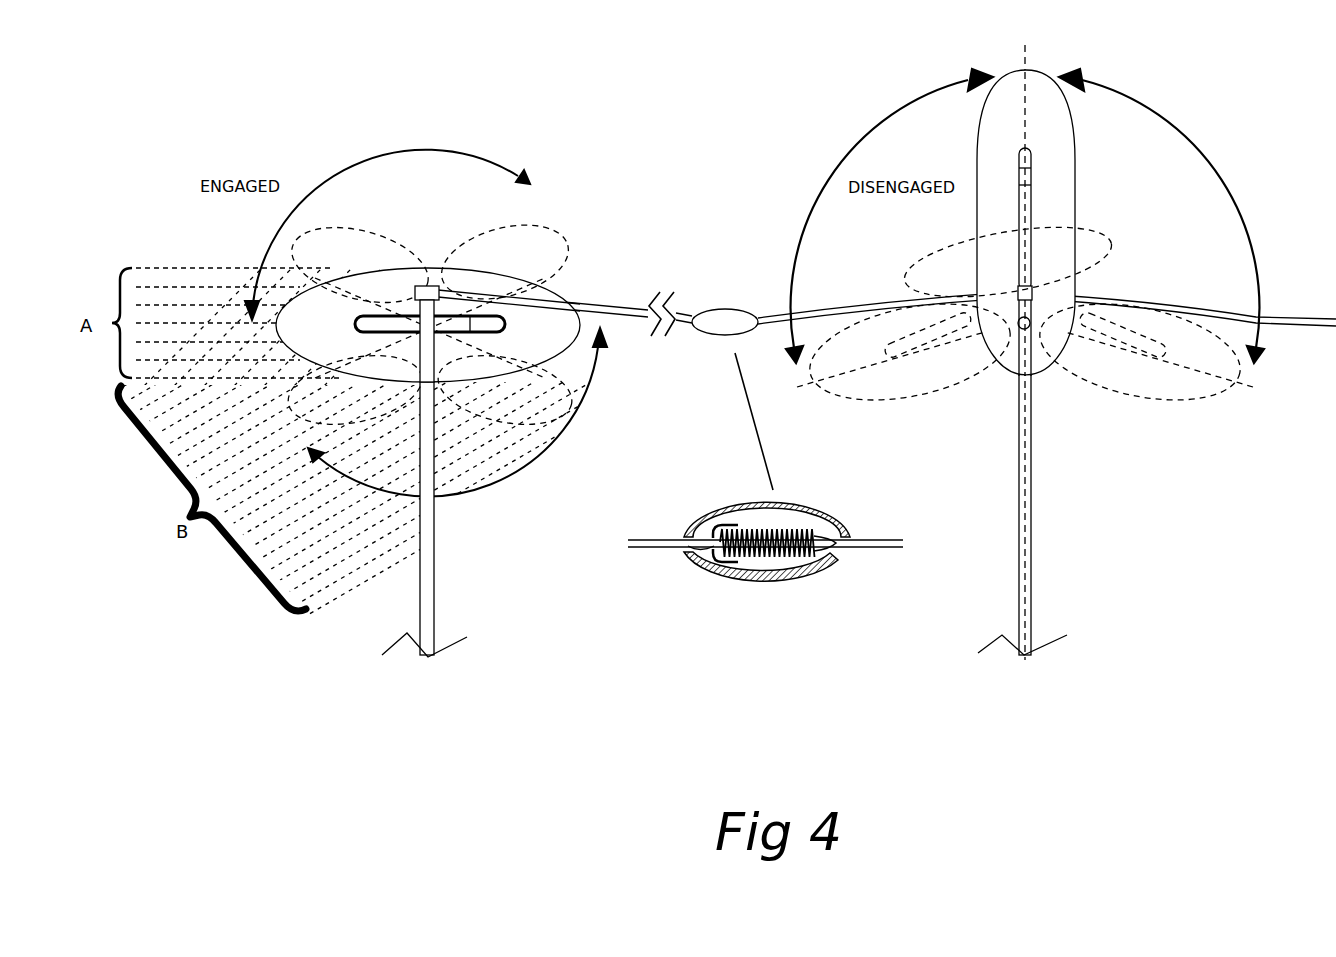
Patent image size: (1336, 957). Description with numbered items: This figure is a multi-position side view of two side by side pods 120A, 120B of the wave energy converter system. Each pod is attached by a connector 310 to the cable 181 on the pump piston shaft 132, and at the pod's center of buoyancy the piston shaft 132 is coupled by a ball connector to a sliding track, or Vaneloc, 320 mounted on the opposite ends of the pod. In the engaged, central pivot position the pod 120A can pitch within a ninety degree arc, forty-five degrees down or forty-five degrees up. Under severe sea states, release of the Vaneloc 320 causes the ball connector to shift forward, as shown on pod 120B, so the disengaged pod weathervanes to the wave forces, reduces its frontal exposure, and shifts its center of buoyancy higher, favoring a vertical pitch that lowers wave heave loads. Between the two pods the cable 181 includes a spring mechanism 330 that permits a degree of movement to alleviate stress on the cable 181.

The pod 120A is at (580, 298).
The pod 120B is at (977, 159).
The pump piston shaft 132 is at (436, 526).
The cable 181 is at (925, 272).
The connector 310 is at (438, 288).
The sliding track (Vaneloc) 320 is at (610, 336).
The spring mechanism 330 is at (812, 506).